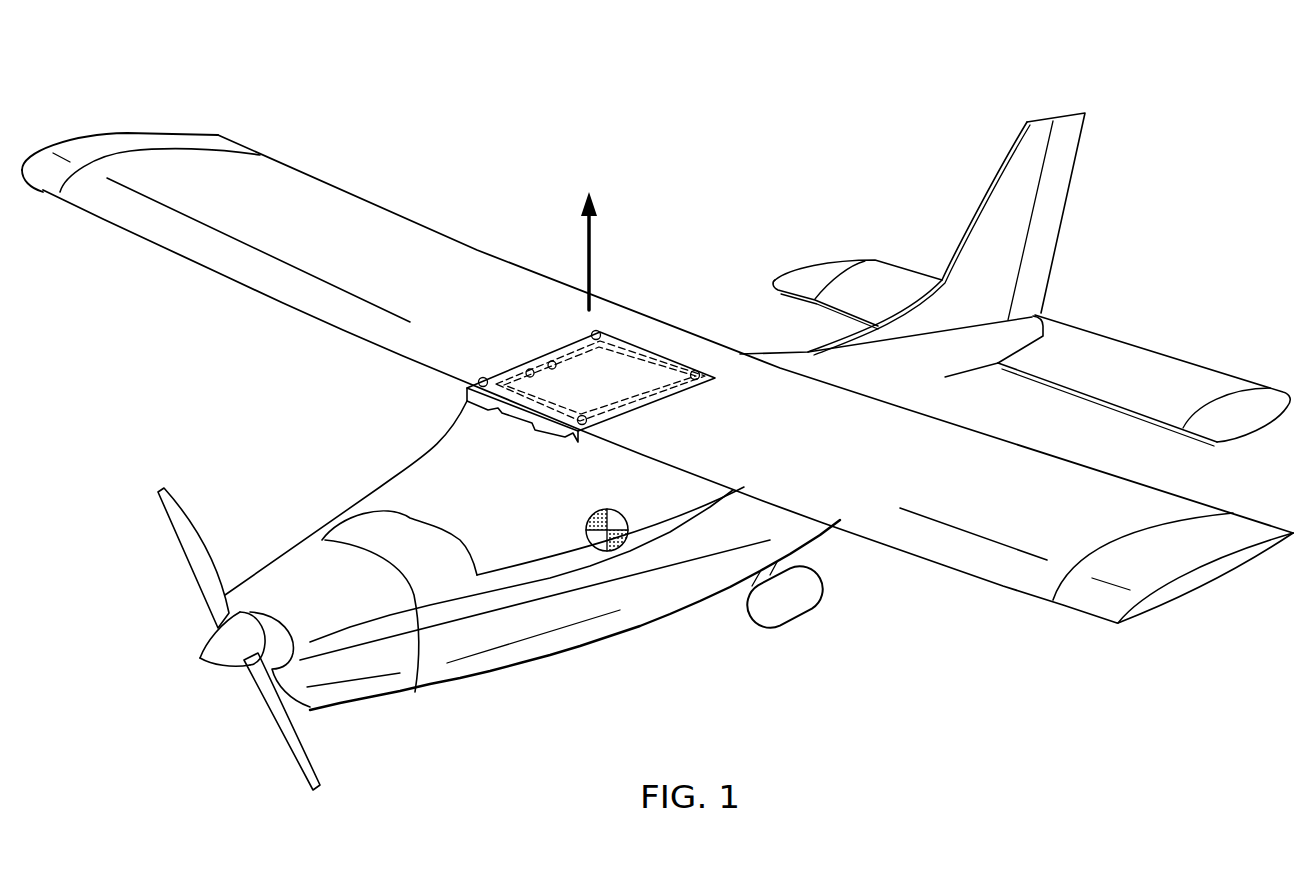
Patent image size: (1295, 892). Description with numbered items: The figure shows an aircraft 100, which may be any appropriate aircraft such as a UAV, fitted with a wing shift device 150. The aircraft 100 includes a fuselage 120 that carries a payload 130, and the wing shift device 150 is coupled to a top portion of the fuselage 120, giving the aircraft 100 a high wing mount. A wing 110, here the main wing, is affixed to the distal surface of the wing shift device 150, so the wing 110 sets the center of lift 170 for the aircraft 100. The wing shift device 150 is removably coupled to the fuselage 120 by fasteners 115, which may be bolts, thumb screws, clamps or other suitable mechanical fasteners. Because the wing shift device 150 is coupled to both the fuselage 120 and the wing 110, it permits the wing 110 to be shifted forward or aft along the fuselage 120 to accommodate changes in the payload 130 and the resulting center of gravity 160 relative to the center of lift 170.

The aircraft 100 is at (778, 108).
The wing 110 is at (672, 340).
The fasteners 115 is at (688, 421).
The fuselage 120 is at (503, 668).
The payload 130 is at (798, 619).
The wing shift device 150 is at (456, 395).
The center of gravity 160 is at (623, 549).
The center of lift 170 is at (592, 243).